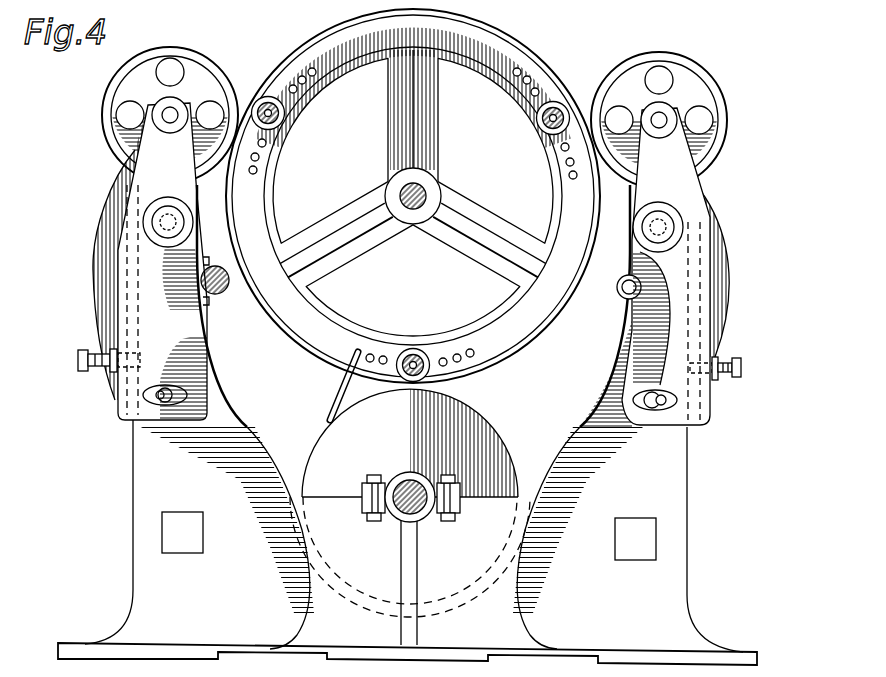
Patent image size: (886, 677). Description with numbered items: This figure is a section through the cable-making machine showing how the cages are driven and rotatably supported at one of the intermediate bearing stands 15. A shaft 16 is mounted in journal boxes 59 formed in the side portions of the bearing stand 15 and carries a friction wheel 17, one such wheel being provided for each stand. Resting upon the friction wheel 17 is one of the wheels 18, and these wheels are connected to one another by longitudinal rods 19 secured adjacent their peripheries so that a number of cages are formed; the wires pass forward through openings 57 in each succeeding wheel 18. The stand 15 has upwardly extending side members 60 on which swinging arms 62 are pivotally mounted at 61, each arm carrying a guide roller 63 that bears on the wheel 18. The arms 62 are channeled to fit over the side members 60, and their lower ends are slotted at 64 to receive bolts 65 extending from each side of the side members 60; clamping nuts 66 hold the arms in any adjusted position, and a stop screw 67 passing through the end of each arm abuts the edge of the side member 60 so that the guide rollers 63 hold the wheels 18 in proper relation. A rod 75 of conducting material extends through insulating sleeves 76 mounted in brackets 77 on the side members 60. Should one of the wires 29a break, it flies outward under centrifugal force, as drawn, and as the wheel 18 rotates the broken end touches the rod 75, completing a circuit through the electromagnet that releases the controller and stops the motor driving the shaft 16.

The intermediate bearing stand 15 is at (670, 582).
The shaft 16 is at (429, 480).
The friction wheel 17 is at (322, 443).
The wheel 18 is at (555, 76).
The longitudinal rod 19 is at (260, 100).
The wire 29a is at (322, 386).
The opening 57 is at (519, 70).
The journal box 59 is at (458, 492).
The side member 60 is at (662, 305).
The pivot 61 is at (680, 223).
The swinging arm 62 is at (682, 158).
The guide roller 63 is at (704, 74).
The slot 64 is at (664, 404).
The bolt 65 is at (654, 407).
The clamping nut 66 is at (677, 400).
The stop screw 67 is at (741, 368).
The rod of conducting material 75 is at (210, 307).
The insulating sleeve 76 is at (212, 266).
The bracket 77 is at (224, 300).